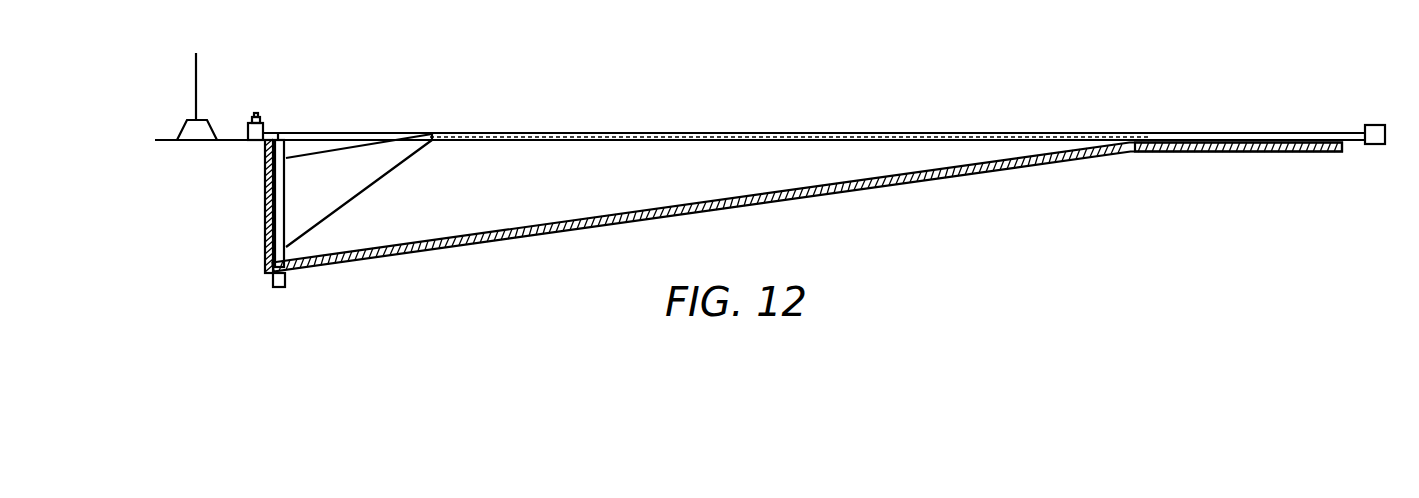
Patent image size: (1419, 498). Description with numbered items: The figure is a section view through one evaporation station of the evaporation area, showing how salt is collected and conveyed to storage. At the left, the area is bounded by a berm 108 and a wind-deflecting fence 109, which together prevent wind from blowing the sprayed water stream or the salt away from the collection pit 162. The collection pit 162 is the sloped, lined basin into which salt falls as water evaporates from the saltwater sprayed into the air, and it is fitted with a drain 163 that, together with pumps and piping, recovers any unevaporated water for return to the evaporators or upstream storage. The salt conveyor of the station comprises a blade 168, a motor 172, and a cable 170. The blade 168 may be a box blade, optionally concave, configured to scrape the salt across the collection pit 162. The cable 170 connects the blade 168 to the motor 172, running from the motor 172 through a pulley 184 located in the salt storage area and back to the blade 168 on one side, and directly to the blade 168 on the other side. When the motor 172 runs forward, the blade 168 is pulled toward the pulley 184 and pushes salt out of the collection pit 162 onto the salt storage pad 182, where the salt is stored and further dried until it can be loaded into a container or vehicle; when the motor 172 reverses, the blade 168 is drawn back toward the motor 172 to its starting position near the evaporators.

The berm 108 is at (186, 121).
The wind-deflecting fence 109 is at (194, 80).
The collection pit 162 is at (508, 240).
The drain 163 is at (280, 288).
The blade 168 is at (286, 185).
The cable 170 is at (1268, 132).
The motor 172 is at (255, 142).
The salt storage pad 182 is at (1223, 151).
The pulley 184 is at (1375, 125).